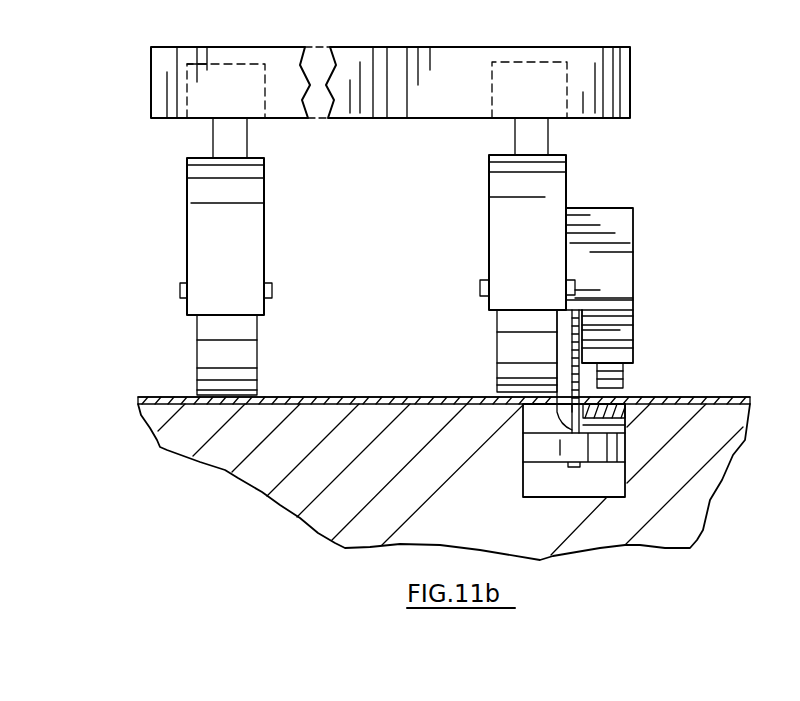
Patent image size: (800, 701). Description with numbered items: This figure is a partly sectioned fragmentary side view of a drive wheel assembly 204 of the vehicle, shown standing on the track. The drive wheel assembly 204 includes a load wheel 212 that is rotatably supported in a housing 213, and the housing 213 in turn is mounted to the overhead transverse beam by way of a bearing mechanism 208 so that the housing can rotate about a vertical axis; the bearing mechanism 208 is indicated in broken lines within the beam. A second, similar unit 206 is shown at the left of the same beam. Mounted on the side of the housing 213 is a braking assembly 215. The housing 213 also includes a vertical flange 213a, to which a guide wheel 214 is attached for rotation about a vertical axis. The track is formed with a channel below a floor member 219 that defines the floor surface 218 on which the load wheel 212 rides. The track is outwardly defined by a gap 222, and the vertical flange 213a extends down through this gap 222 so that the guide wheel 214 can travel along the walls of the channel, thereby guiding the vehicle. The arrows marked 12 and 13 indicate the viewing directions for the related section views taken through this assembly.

The bearing mechanism 208 is at (490, 80).
The drive wheel assembly 204 is at (592, 161).
The actuator cylinder 206 is at (176, 227).
The housing 213 is at (567, 192).
The load wheel 212 is at (500, 350).
The braking assembly 215 is at (643, 246).
The vertical flange 213a is at (625, 372).
The floor surface 218 is at (726, 396).
The floor member 219 is at (704, 396).
The gap 222 is at (562, 408).
The guide wheel 214 is at (548, 448).
The section line 12 is at (668, 330).
The section line 13 is at (120, 408).